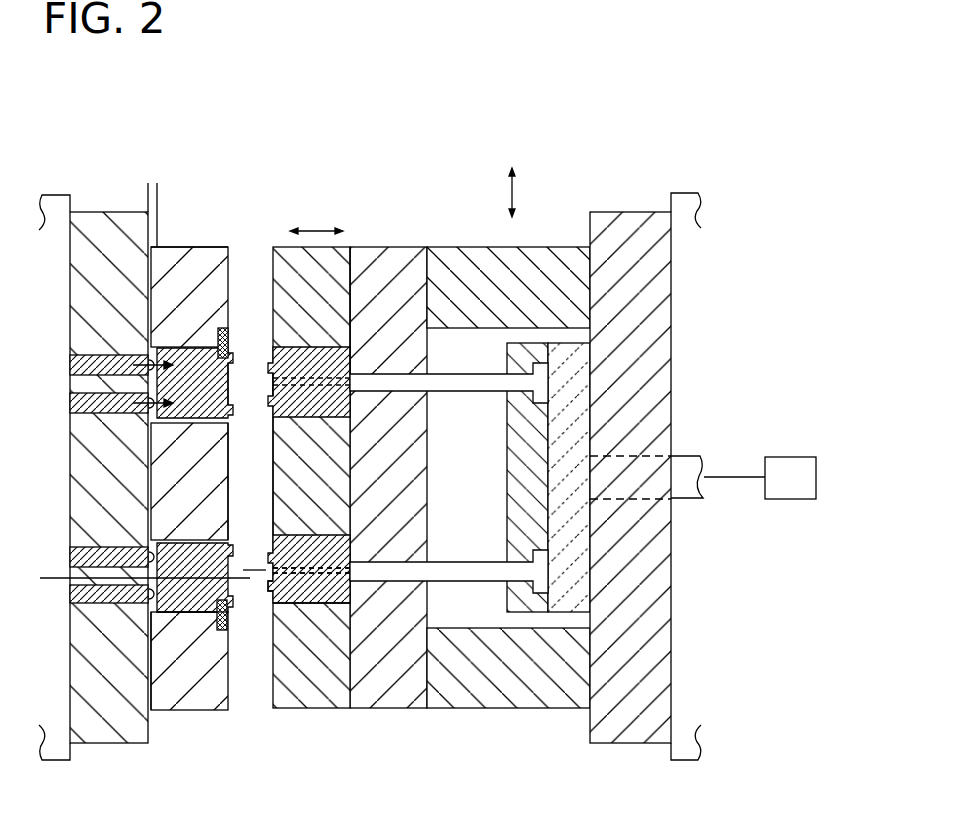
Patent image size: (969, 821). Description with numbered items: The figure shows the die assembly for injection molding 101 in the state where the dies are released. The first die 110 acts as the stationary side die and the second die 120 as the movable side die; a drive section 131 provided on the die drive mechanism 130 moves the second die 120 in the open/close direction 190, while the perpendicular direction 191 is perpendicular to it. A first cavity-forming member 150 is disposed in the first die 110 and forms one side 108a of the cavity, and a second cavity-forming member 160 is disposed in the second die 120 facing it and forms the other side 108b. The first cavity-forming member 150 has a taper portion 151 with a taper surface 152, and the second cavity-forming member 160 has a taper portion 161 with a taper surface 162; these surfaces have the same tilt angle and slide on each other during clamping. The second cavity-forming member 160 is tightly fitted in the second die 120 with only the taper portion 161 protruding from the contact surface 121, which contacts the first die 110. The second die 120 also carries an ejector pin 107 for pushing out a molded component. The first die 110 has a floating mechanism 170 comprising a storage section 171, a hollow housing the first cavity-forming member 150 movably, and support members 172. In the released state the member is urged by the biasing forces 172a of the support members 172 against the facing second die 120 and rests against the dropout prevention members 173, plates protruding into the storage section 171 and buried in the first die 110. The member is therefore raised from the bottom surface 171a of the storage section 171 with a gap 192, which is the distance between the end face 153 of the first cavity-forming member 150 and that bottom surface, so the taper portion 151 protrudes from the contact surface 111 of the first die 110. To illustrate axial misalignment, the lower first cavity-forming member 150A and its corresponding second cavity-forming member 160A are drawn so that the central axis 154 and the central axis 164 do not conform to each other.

The die assembly for injection molding 101 is at (612, 198).
The ejector pin 107 is at (350, 348).
The one side of the cavity 108a is at (229, 384).
The other side of the cavity 108b is at (271, 384).
The first die 110 is at (133, 178).
The contact surface 111 is at (246, 452).
The second die 120 is at (468, 245).
The contact surface 121 is at (272, 455).
The die drive mechanism 130 is at (716, 440).
The drive section 131 is at (783, 457).
The first cavity-forming member 150 is at (185, 363).
The first cavity-forming member 150A is at (149, 622).
The taper portion 151 is at (212, 613).
The taper surface 152 is at (230, 600).
The end face 153 is at (125, 577).
The central axis 154 is at (198, 613).
The second cavity-forming member 160 is at (316, 347).
The second cavity-forming member 160A is at (336, 604).
The taper portion 161 is at (283, 604).
The taper surface 162 is at (266, 589).
The central axis 164 is at (244, 570).
The floating mechanism 170 is at (136, 624).
The storage section 171 is at (172, 613).
The bottom surface of the storage section 171a is at (134, 545).
The support member 172 is at (82, 606).
The biasing force 172a is at (137, 353).
The dropout prevention member 173 is at (220, 328).
The open/close direction 190 is at (312, 231).
The perpendicular direction 191 is at (514, 192).
The gap 192 is at (164, 190).